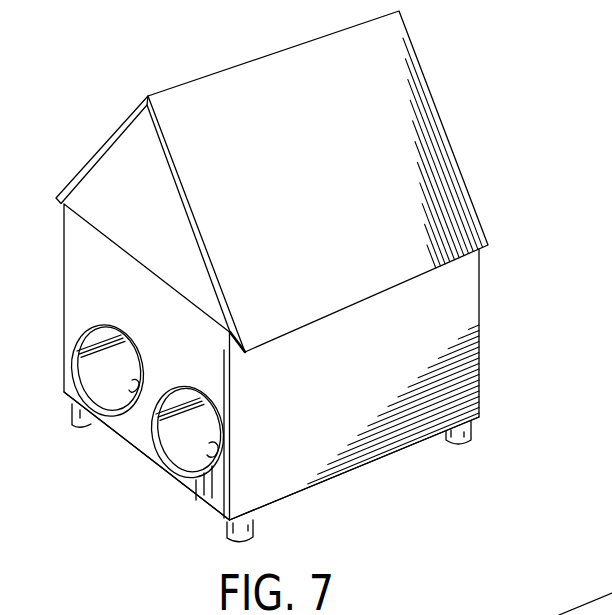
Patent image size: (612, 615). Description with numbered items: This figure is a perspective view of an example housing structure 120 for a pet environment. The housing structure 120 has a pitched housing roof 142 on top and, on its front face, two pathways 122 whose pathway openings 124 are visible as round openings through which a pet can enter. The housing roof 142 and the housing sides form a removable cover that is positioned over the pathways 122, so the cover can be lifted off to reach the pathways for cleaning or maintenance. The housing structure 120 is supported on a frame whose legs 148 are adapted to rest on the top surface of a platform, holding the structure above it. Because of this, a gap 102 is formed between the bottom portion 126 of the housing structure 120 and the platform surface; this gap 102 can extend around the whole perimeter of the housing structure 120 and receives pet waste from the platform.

The housing structure 120 is at (496, 70).
The housing roof 142 is at (399, 163).
The gap 102 is at (110, 454).
The pathway 122 is at (102, 375).
The pathway opening 124 is at (214, 450).
The bottom portion 126 is at (167, 478).
The leg 148 is at (256, 527).